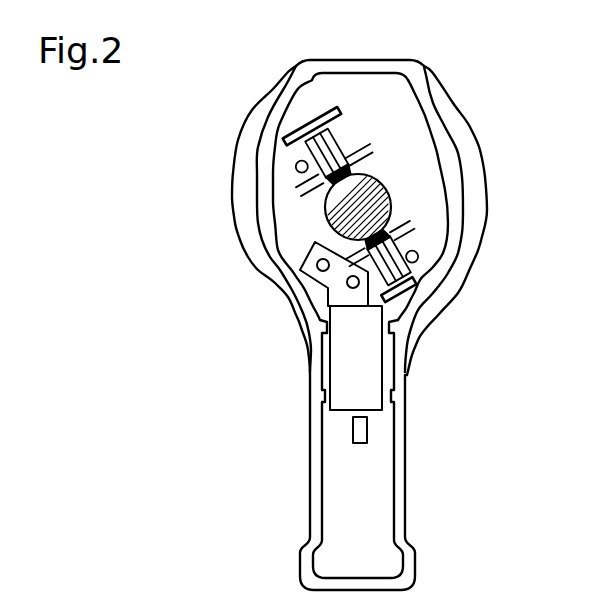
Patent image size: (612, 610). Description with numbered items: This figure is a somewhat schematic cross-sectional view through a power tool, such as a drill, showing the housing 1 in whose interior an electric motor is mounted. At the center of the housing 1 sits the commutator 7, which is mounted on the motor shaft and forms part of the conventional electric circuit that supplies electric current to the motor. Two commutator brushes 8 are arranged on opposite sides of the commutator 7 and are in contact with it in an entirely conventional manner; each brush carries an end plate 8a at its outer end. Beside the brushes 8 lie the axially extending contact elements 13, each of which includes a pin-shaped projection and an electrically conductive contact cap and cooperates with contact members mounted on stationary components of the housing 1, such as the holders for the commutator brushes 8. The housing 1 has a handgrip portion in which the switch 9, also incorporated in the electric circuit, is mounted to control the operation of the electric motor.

The housing 1 is at (427, 82).
The commutator 7 is at (378, 203).
The commutator brushes 8 is at (335, 186).
The pin cap plate 8a is at (336, 128).
The switch 9 is at (349, 341).
The contact elements 13 is at (296, 167).